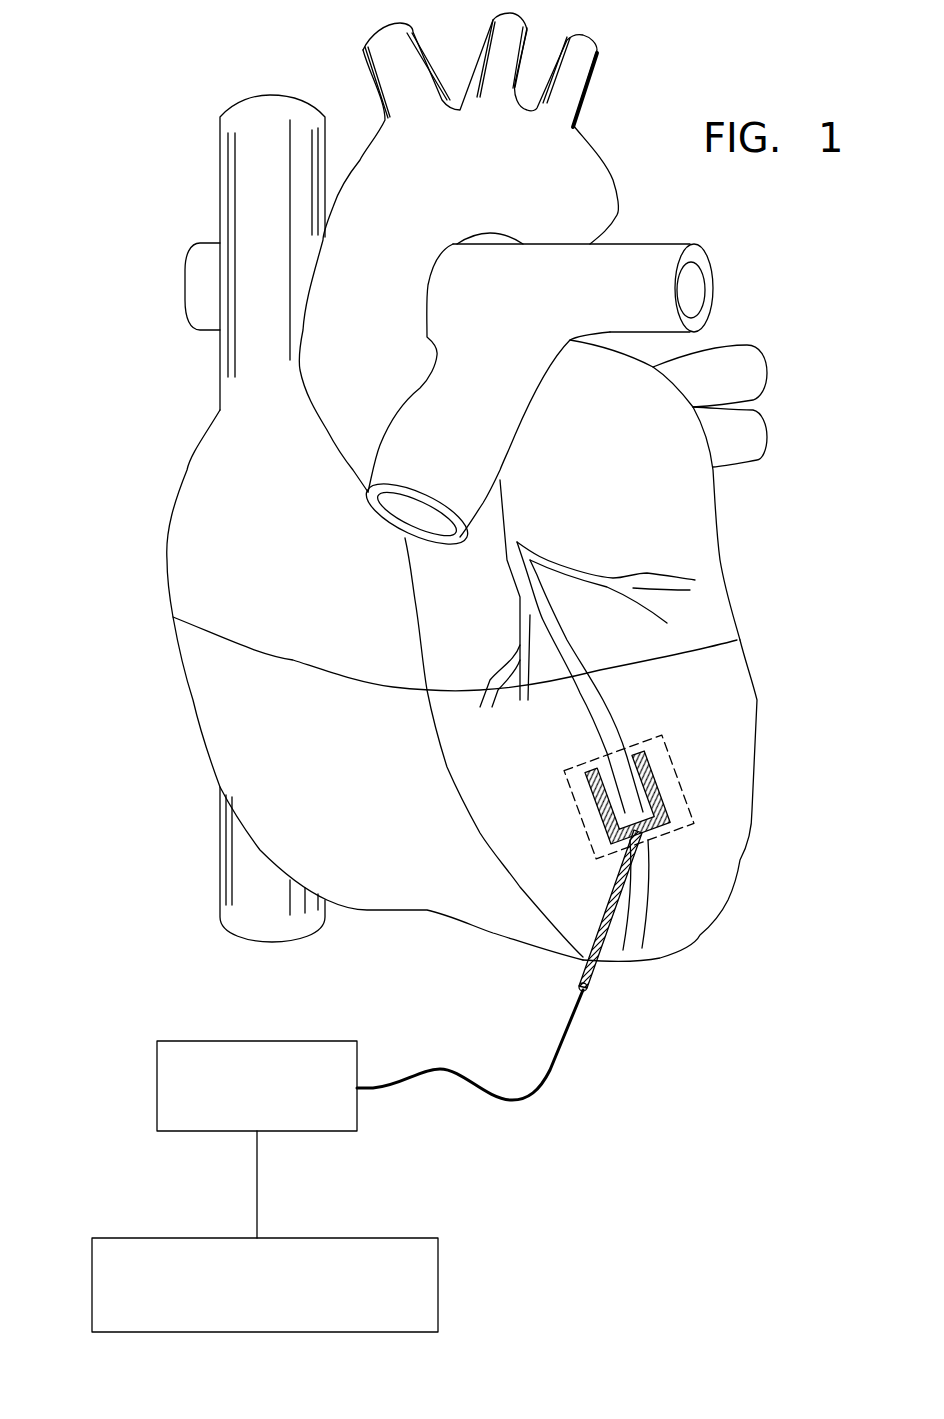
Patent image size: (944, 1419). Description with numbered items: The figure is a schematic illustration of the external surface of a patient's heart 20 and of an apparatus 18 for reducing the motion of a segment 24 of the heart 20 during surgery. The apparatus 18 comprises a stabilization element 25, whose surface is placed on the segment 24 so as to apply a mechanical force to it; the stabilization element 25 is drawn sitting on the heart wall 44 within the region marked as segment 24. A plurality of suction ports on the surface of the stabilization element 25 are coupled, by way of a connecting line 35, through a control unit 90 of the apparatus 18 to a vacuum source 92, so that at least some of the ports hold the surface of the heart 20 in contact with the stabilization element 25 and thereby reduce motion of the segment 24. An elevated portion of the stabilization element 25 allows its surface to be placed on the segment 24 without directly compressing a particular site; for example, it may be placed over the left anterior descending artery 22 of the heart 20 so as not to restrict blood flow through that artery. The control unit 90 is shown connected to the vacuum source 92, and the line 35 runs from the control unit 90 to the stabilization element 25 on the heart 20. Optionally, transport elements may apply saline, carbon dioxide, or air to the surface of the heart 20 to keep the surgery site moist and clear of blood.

The apparatus 18 is at (541, 1239).
The heart 20 is at (115, 416).
The left anterior descending artery 22 is at (562, 653).
The segment 24 is at (670, 753).
The stabilization element 25 is at (592, 978).
The connecting tube 35 is at (537, 1092).
The heart wall 44 is at (728, 890).
The control unit 90 is at (177, 1041).
The vacuum source 92 is at (107, 1238).